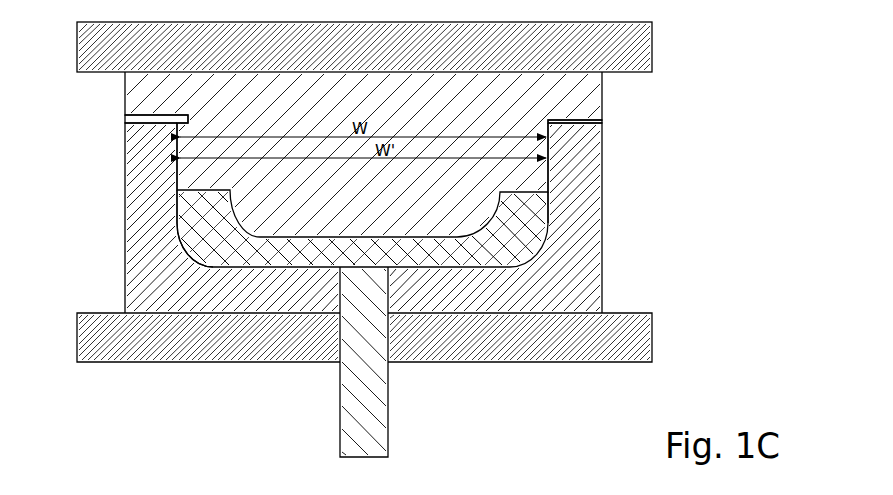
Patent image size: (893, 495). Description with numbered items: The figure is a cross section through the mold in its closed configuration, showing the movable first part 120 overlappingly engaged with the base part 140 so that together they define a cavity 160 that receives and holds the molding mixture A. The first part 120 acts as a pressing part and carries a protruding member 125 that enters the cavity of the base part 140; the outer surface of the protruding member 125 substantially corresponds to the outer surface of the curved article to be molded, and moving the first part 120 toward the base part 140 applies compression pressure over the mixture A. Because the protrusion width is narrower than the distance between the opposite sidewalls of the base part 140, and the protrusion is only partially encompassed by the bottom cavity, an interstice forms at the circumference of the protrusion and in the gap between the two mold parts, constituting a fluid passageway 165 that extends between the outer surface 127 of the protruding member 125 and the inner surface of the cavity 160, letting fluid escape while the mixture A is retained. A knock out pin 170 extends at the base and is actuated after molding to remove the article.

The first part 120 is at (570, 93).
The protruding member 125 is at (552, 242).
The outer surface of the protrusion 127 is at (128, 117).
The base part 140 is at (602, 286).
The cavity 160 is at (555, 212).
The fluid passageway 165 is at (177, 190).
The knock out pin 170 is at (400, 330).
The molding mixture A is at (192, 257).